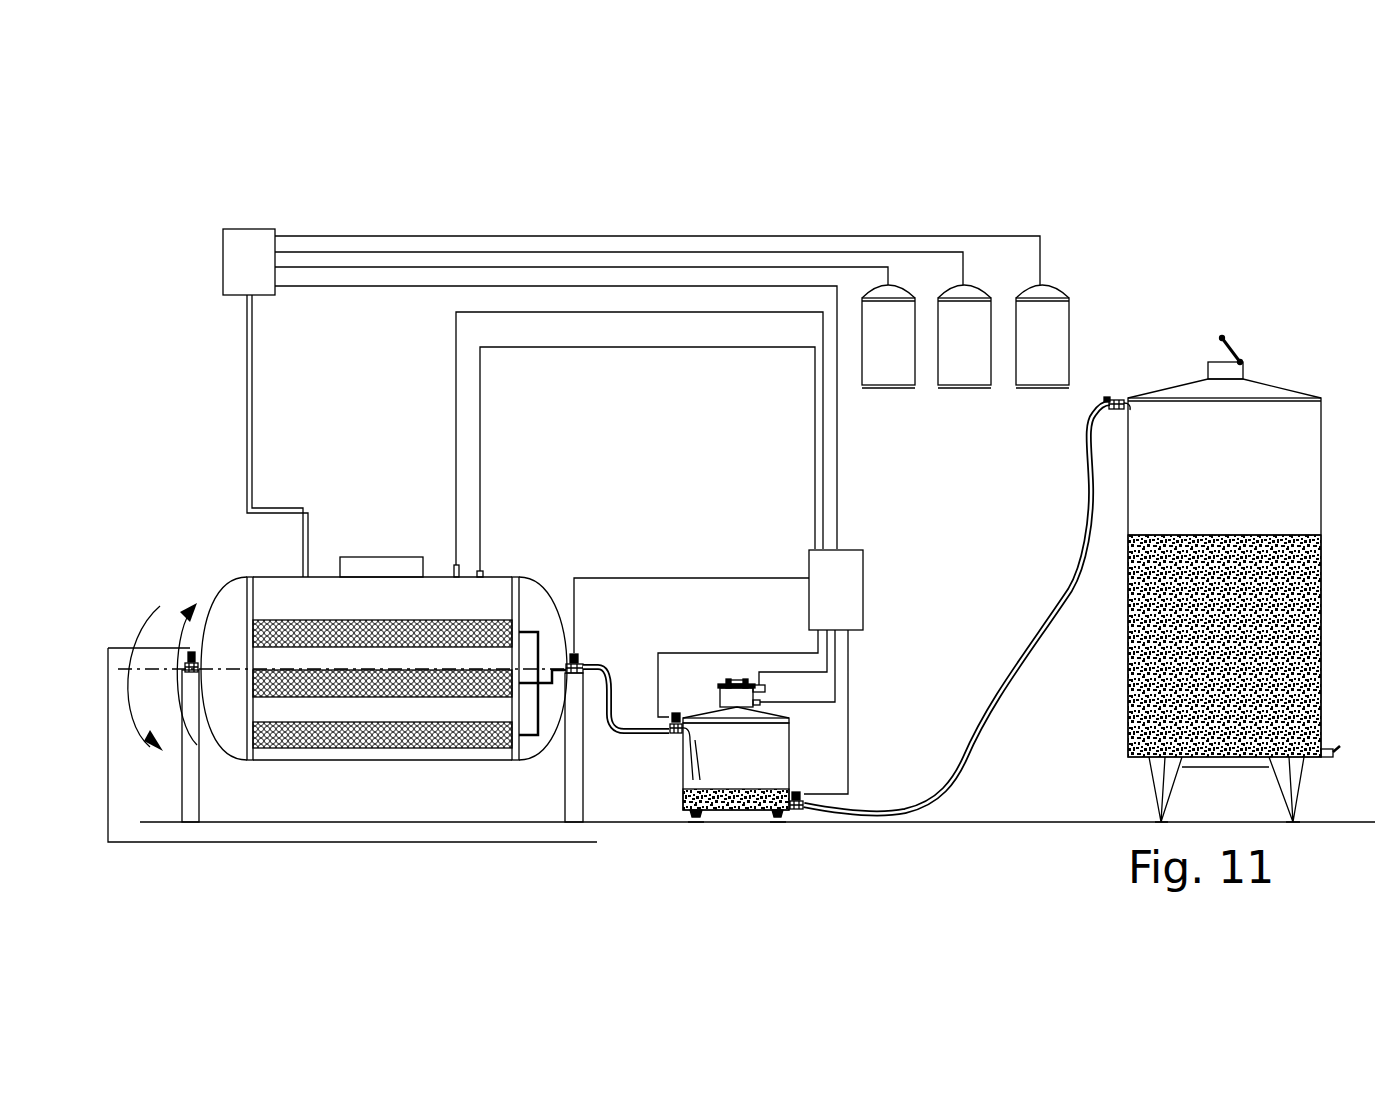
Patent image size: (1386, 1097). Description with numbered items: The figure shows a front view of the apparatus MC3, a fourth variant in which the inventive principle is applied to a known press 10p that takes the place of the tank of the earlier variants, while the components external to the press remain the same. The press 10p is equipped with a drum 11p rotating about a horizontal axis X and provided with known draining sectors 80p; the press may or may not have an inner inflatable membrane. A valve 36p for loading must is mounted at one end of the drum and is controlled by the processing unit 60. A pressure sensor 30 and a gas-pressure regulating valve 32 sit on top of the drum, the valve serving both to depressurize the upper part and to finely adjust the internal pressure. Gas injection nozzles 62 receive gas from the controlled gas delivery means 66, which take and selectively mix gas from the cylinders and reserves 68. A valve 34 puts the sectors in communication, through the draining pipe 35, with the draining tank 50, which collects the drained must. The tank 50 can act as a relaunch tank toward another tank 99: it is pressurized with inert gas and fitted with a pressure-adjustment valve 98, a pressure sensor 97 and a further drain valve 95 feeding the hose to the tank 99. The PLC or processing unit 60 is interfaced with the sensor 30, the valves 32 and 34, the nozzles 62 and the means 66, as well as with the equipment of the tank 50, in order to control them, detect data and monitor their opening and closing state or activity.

The press 10p is at (550, 585).
The drum 11p is at (321, 576).
The pressure sensor 30 is at (486, 573).
The gas-pressure regulating valve 32 is at (624, 444).
The valve 34 is at (578, 655).
The draining pipe 35 is at (613, 741).
The valve for loading must 36p is at (187, 657).
The draining tank 50 is at (683, 772).
The processing unit 60 is at (841, 603).
The nozzles for gas injection 62 is at (247, 458).
The controlled gas delivery means 66 is at (241, 246).
The cylinders and reserves 68 is at (888, 355).
The draining sectors 80p is at (367, 628).
The drain valve 95 is at (797, 790).
The pressure sensor 97 is at (777, 690).
The pressure-adjustment valve 98 is at (757, 683).
The tank 99 is at (1321, 500).
The horizontal axis X is at (232, 668).
The apparatus MC3 is at (689, 196).